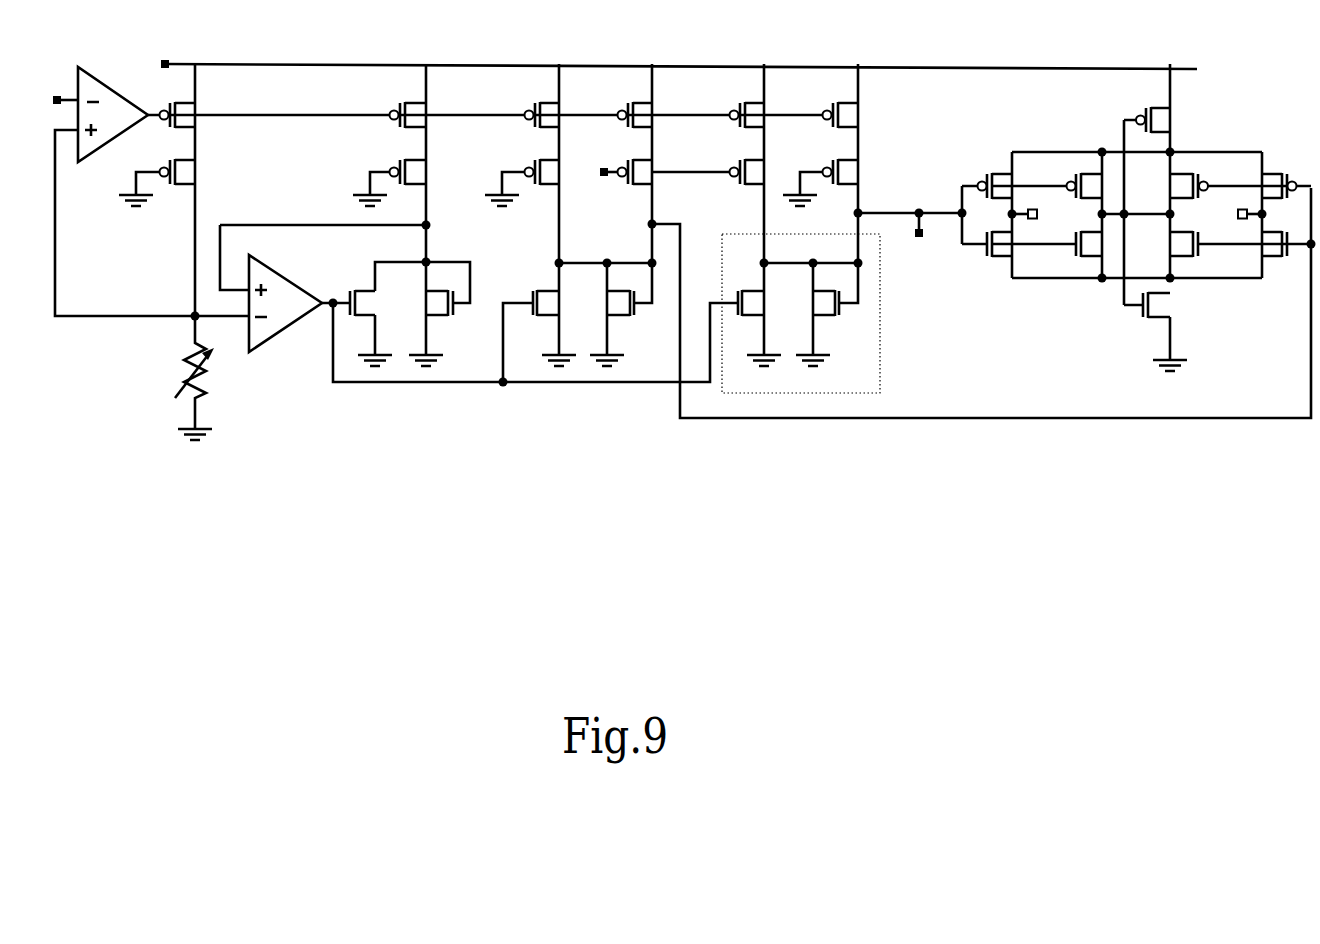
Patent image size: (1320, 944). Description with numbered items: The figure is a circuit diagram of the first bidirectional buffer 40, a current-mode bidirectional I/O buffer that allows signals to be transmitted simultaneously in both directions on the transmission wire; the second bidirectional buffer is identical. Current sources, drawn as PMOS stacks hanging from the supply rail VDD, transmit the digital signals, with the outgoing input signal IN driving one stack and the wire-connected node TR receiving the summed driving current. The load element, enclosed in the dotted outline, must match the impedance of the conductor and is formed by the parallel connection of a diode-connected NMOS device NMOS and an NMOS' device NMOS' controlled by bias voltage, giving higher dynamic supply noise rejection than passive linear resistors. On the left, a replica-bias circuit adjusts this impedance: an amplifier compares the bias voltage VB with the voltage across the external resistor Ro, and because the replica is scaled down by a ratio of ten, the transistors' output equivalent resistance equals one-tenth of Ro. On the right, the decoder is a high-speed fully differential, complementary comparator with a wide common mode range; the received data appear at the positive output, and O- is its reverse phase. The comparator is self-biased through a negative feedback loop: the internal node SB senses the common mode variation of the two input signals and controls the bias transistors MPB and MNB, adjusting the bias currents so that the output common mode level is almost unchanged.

The first bidirectional buffer 40 is at (666, 295).
The supply voltage VDD is at (657, 64).
The bias voltage input VB is at (47, 100).
The external resistor Ro is at (182, 378).
The outgoing input signal IN is at (598, 164).
The wire connected node TR is at (919, 236).
The NMOS' device NMOS' is at (774, 314).
The NMOS device of a diode NMOS is at (841, 313).
The reverse-phase received data output O- is at (1041, 215).
The internal node SB is at (1140, 212).
The PMOS bias transistor MPB is at (1166, 120).
The NMOS bias transistor MNB is at (1172, 331).